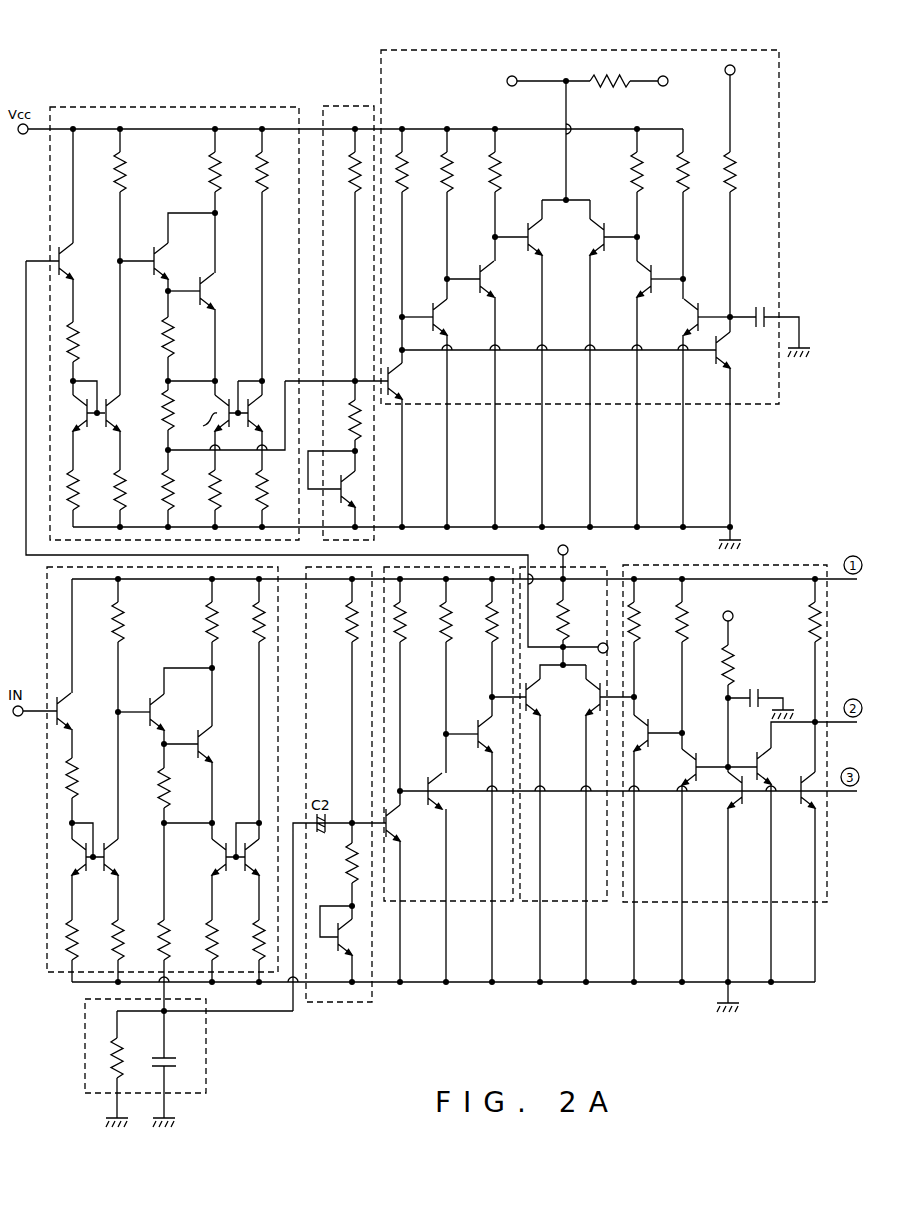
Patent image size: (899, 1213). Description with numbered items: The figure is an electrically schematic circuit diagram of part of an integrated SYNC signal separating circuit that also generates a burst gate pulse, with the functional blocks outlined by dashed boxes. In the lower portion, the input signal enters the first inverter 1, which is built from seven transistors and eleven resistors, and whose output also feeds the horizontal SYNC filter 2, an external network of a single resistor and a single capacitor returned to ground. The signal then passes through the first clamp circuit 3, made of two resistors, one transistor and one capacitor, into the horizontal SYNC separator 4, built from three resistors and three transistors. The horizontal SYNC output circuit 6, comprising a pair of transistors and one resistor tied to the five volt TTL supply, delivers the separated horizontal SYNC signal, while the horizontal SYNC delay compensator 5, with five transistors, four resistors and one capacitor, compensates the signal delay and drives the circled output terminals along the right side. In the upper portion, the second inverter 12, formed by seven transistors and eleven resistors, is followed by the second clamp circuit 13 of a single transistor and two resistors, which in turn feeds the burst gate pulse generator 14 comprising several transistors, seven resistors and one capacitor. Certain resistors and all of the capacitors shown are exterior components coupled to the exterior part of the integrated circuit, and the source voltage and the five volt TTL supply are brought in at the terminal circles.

The first inverter 1 is at (47, 785).
The horizontal SYNC filter 2 is at (208, 1066).
The first clamp circuit 3 is at (347, 1005).
The horizontal SYNC separator 4 is at (465, 905).
The horizontal SYNC delay compensator 5 is at (708, 905).
The horizontal SYNC output circuit 6 is at (565, 905).
The second inverter 12 is at (171, 107).
The second clamp circuit 13 is at (346, 106).
The burst gate pulse generator 14 is at (562, 50).